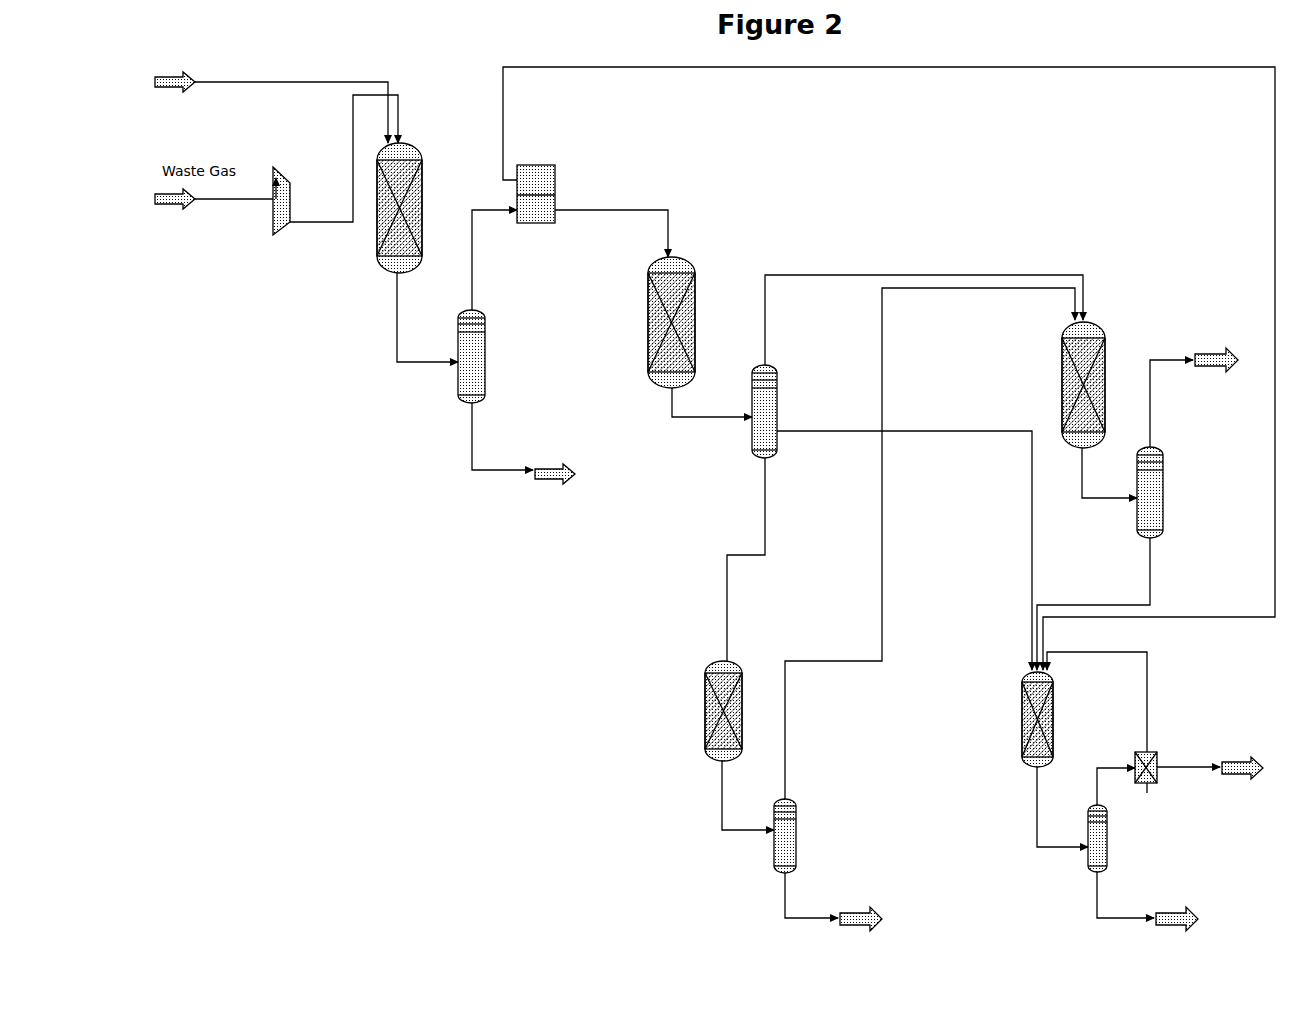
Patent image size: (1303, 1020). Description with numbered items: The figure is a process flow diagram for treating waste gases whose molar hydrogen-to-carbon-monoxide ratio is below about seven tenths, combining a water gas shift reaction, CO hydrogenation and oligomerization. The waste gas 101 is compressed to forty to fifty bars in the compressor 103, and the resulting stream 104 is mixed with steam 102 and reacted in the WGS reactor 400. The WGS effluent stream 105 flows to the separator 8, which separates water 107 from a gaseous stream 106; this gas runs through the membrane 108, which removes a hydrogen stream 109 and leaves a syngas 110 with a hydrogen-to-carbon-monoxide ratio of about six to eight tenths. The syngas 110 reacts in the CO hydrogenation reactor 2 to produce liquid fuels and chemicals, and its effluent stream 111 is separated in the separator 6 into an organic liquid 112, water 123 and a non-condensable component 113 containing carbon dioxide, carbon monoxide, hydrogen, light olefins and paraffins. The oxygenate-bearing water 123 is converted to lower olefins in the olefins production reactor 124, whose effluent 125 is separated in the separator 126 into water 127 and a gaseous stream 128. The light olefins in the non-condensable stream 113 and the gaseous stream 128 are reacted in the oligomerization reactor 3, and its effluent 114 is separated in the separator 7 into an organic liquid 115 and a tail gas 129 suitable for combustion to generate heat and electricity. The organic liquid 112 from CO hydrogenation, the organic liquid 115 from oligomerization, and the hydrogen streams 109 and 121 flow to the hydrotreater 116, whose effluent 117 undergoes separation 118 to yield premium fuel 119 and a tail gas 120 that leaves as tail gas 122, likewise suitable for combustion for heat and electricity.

The waste gas 101 is at (198, 192).
The steam 102 is at (254, 95).
The compressor 103 is at (277, 171).
The compressed waste gas stream 104 is at (344, 158).
The WGS reactor effluent stream 105 is at (427, 317).
The gaseous stream 106 is at (476, 260).
The water 107 is at (526, 443).
The membrane 108 is at (560, 180).
The hydrogen stream 109 is at (889, 350).
The syngas 110 is at (611, 215).
The effluent stream 111 is at (712, 398).
The organic liquid 112 is at (904, 533).
The non-condensable component 113 is at (924, 299).
The oligomerization effluent 114 is at (1109, 473).
The organic liquid 115 is at (1093, 604).
The hydrotreater 116 is at (982, 719).
The hydrotreater effluent 117 is at (1062, 807).
The separation 118 is at (1132, 832).
The premium fuel 119 is at (1182, 901).
The tail gas 120 is at (1124, 765).
The hydrogen stream 121 is at (1116, 692).
The tail gas 122 is at (1220, 755).
The water 123 is at (744, 559).
The olefins production reactor 124 is at (679, 709).
The olefins reactor effluent 125 is at (748, 795).
The separator 126 is at (824, 830).
The water 127 is at (833, 902).
The gaseous stream 128 is at (930, 543).
The tail gas 129 is at (1201, 384).
The WGS reactor 400 is at (438, 183).
The CO hydrogenation reactor 2 is at (620, 315).
The oligomerization reactor 3 is at (1009, 374).
The separator 6 is at (797, 397).
The separator 7 is at (1183, 483).
The separator 8 is at (509, 356).